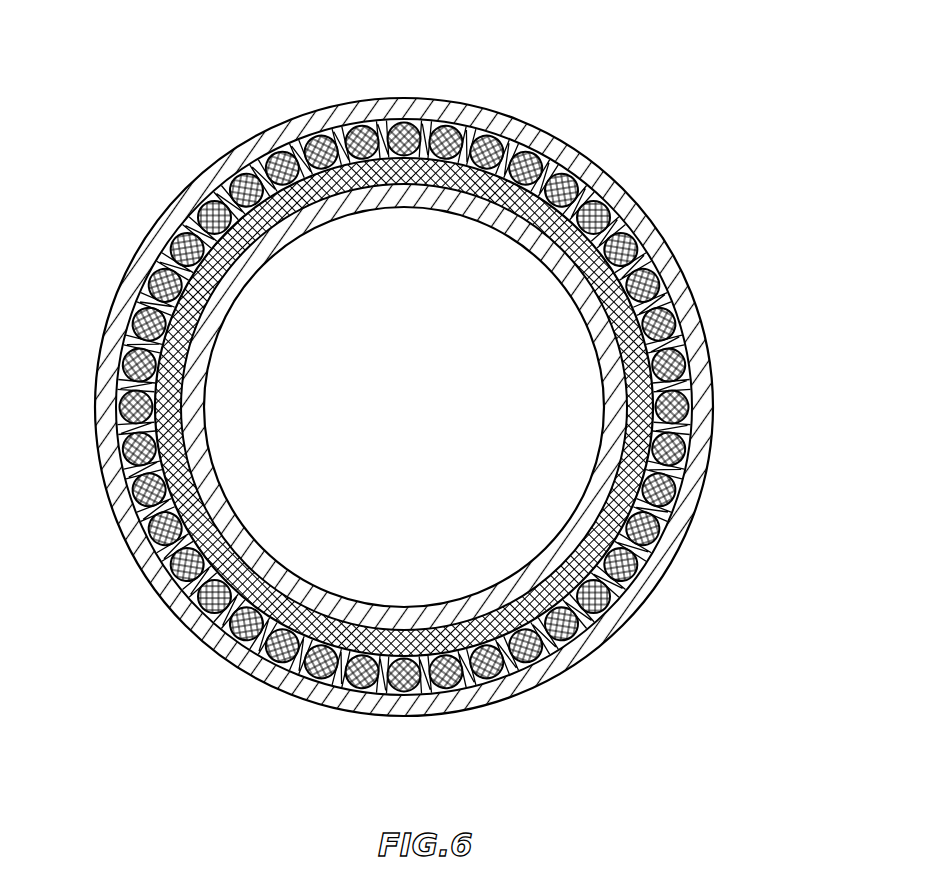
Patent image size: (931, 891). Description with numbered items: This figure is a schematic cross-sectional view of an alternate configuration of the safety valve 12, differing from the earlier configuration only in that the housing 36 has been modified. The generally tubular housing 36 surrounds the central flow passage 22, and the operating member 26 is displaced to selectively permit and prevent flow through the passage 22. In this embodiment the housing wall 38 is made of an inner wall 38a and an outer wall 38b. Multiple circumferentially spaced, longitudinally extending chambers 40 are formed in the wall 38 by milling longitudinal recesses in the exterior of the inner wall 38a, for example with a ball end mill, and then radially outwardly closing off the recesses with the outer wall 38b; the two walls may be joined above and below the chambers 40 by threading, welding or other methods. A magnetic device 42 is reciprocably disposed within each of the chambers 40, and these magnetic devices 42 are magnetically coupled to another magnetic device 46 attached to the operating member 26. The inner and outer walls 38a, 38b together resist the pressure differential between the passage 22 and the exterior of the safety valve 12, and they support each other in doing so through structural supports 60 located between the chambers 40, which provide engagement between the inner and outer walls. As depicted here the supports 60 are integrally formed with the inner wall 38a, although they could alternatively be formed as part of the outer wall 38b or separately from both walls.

The safety valve 12 is at (686, 58).
The passage 22 is at (398, 406).
The operating member 26 is at (212, 427).
The housing 36 is at (710, 318).
The housing wall 38 is at (431, 439).
The inner wall 38a is at (510, 225).
The outer wall 38b is at (580, 163).
The chambers 40 is at (457, 115).
The magnetic device 42 is at (362, 116).
The magnetic device 46 is at (640, 208).
The structural supports 60 is at (547, 150).